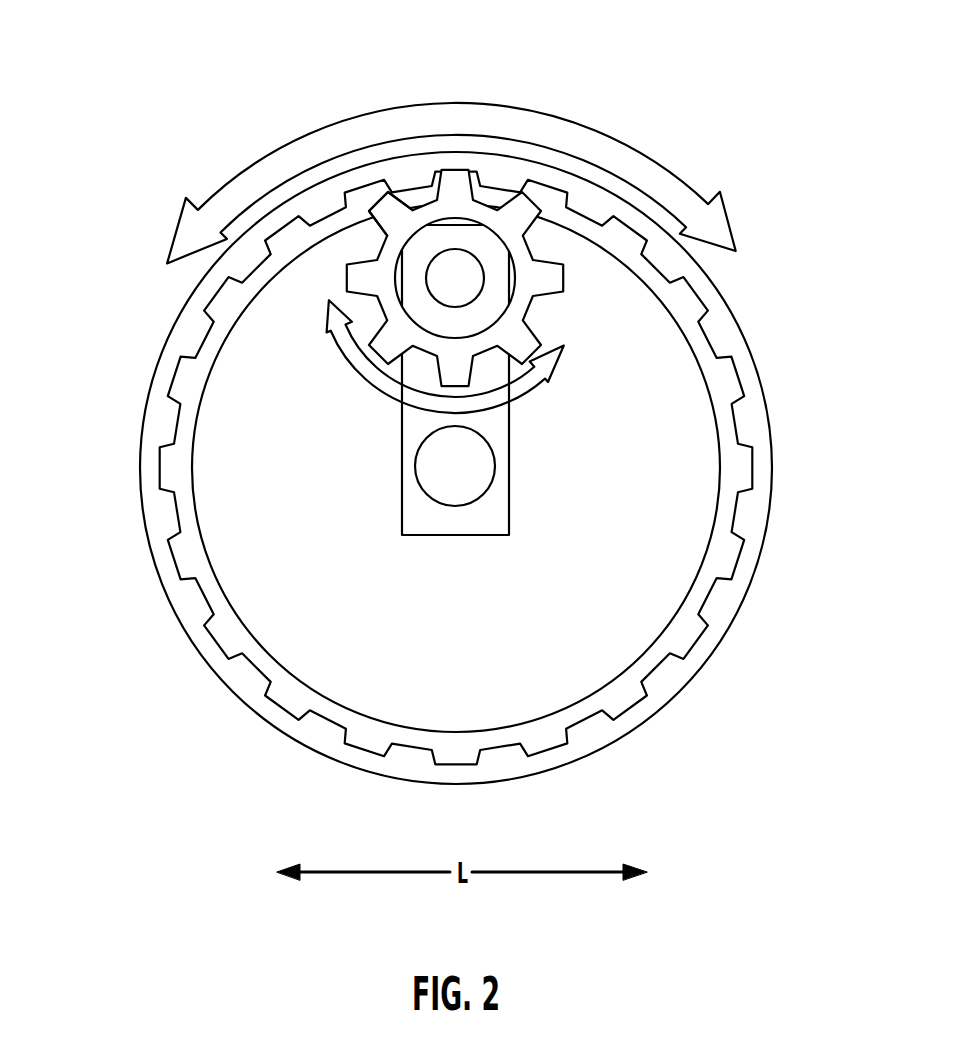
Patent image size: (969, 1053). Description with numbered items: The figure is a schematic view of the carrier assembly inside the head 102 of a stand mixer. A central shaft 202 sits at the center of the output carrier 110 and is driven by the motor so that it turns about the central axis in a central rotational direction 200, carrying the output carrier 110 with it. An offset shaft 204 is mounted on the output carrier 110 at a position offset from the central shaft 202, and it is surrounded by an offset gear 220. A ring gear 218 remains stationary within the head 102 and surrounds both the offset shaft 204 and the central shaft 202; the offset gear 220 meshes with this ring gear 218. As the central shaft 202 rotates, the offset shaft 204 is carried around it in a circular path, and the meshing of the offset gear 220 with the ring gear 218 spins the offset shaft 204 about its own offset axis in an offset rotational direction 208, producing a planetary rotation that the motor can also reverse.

The head 102 is at (434, 447).
The output carrier 110 is at (220, 586).
The central rotational direction 200 is at (585, 122).
The central shaft 202 is at (496, 470).
The offset shaft 204 is at (484, 278).
The offset rotational direction 208 is at (529, 387).
The ring gear 218 is at (147, 403).
The offset gear 220 is at (388, 212).